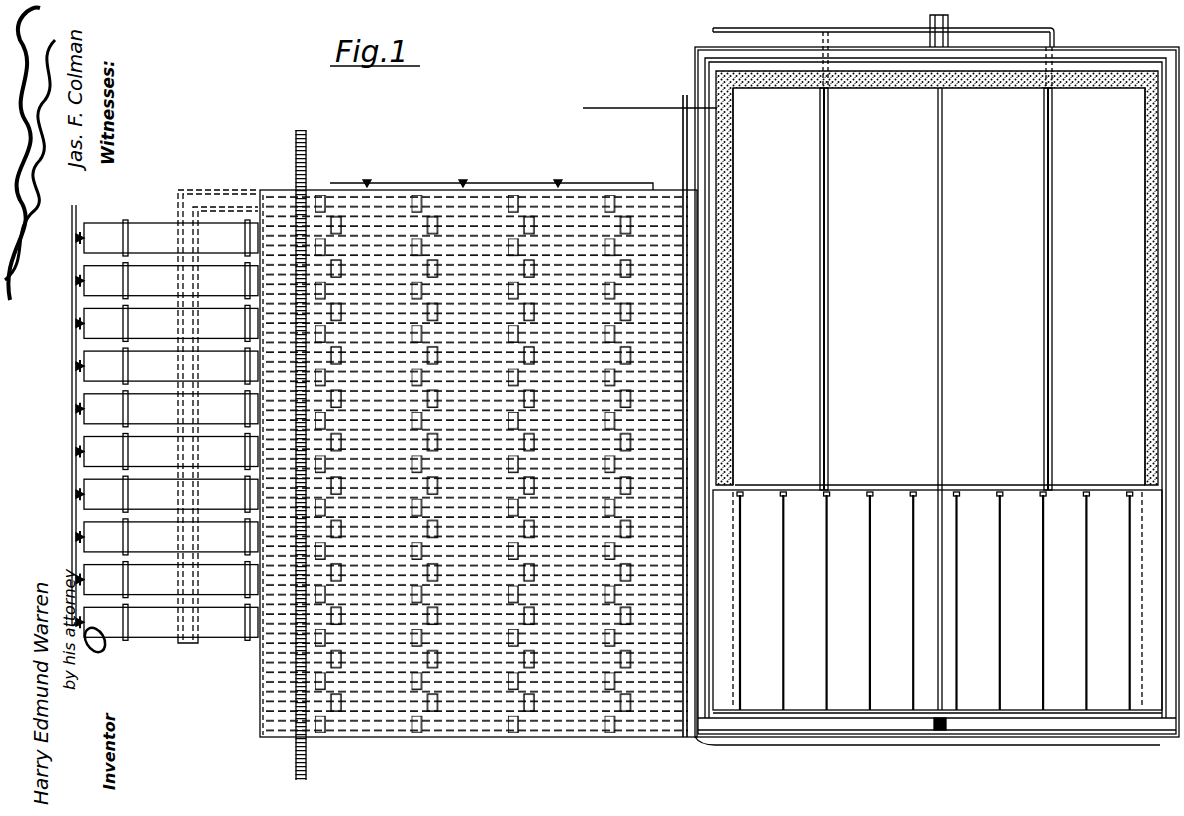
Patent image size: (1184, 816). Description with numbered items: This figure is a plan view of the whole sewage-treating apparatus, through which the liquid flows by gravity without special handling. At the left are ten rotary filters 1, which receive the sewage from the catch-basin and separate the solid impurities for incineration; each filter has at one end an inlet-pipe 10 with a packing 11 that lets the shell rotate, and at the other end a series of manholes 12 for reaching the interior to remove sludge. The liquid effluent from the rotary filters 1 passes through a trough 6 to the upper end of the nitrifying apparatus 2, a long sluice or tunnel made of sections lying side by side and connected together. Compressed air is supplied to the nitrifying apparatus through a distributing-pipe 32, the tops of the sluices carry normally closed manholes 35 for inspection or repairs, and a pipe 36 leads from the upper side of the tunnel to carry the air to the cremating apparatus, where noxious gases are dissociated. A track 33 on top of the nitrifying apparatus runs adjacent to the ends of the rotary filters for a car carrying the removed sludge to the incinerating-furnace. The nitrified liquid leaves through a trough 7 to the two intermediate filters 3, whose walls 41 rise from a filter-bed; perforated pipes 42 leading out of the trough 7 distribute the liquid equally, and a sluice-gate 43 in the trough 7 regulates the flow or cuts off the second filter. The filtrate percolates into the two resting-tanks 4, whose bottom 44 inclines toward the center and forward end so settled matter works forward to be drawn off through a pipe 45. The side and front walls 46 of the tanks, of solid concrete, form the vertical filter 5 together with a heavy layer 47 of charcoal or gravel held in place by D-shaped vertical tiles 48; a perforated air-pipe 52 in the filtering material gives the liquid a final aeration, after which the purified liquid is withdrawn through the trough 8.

The rotary filter 1 is at (152, 221).
The nitrifying apparatus 2 is at (478, 477).
The intermediate filter 3 is at (937, 601).
The resting-tank 4 is at (936, 399).
The vertical filter 5 is at (736, 380).
The trough 6 is at (186, 200).
The trough 7 is at (856, 725).
The trough 8 is at (930, 22).
The inlet-pipe 10 is at (72, 548).
The packing 11 is at (72, 406).
The manholes 12 is at (236, 213).
The distributing-pipe 32 is at (683, 158).
The chain 33 is at (306, 756).
The manholes 35 is at (516, 200).
The pipe 36 is at (592, 183).
The walls 41 is at (715, 677).
The perforated pipes 42 is at (784, 611).
The sluice-gate 43 is at (938, 730).
The bottom 44 is at (940, 448).
The pipe 45 is at (1000, 30).
The walls 46 is at (1143, 62).
The layer of filtering material 47 is at (1092, 100).
The vertical tiles 48 is at (1110, 114).
The perforated air-pipe 52 is at (668, 108).